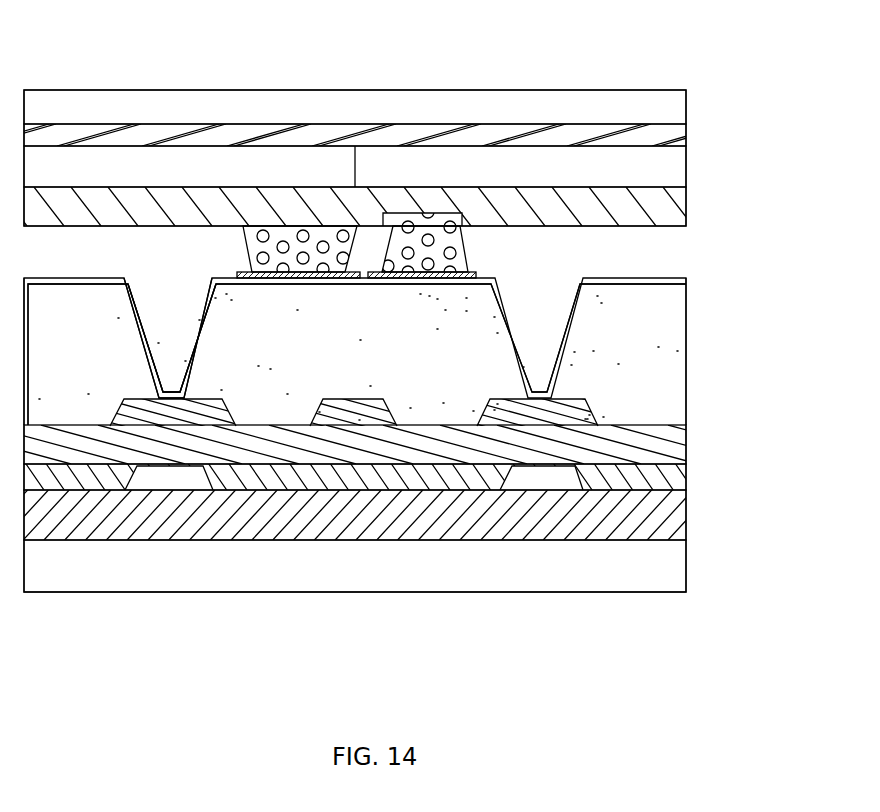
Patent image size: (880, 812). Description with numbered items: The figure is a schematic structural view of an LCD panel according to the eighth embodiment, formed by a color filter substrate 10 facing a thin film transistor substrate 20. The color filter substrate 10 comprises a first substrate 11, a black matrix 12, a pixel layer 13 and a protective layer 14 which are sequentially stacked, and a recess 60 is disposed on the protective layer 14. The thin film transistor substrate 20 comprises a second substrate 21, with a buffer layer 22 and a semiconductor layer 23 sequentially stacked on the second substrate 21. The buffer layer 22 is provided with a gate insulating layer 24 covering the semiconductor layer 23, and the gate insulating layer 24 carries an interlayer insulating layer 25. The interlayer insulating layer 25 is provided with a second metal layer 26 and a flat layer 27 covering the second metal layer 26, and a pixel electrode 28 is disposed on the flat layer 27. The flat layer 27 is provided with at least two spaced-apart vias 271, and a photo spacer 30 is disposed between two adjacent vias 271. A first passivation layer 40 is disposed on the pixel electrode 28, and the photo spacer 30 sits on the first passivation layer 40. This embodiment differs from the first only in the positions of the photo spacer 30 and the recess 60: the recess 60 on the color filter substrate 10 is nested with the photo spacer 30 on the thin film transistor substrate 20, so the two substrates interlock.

The color filter substrate 10 is at (218, 68).
The first substrate 11 is at (686, 100).
The black matrix 12 is at (686, 134).
The pixel layer 13 is at (686, 172).
The protective layer 14 is at (686, 210).
The thin film transistor substrate 20 is at (242, 630).
The second substrate 21 is at (686, 560).
The buffer layer 22 is at (686, 512).
The semiconductor layer 23 is at (535, 478).
The gate insulating layer 24 is at (686, 480).
The interlayer insulating layer 25 is at (686, 435).
The second metal layer 26 is at (222, 399).
The flat layer 27 is at (686, 352).
The vias 271 is at (137, 297).
The pixel electrode 28 is at (686, 280).
The photo spacer 30 is at (466, 257).
The first passivation layer 40 is at (347, 285).
The recess 60 is at (422, 212).